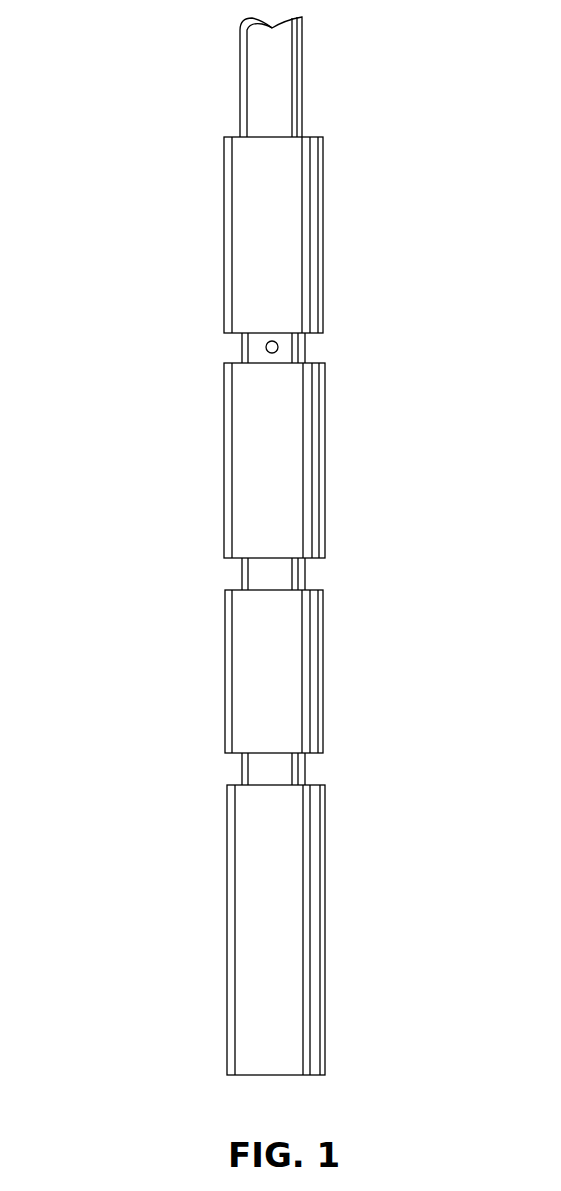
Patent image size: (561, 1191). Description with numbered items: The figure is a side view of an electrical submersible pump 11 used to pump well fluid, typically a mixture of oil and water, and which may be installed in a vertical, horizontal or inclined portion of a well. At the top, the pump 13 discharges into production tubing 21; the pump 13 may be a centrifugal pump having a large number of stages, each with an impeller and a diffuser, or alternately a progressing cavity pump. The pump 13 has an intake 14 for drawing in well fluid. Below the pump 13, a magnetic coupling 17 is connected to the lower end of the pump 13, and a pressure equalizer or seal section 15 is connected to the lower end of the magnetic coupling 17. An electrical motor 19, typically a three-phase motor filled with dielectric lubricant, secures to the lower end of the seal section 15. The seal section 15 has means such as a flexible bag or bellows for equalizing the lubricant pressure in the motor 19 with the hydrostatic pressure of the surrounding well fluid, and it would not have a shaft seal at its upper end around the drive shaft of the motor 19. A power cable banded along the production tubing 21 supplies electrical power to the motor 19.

The electrical submersible pump 11 is at (145, 462).
The pump 13 is at (223, 233).
The intake 14 is at (279, 347).
The seal section 15 is at (225, 662).
The magnetic coupling 17 is at (223, 405).
The electrical motor 19 is at (227, 900).
The production tubing 21 is at (240, 90).